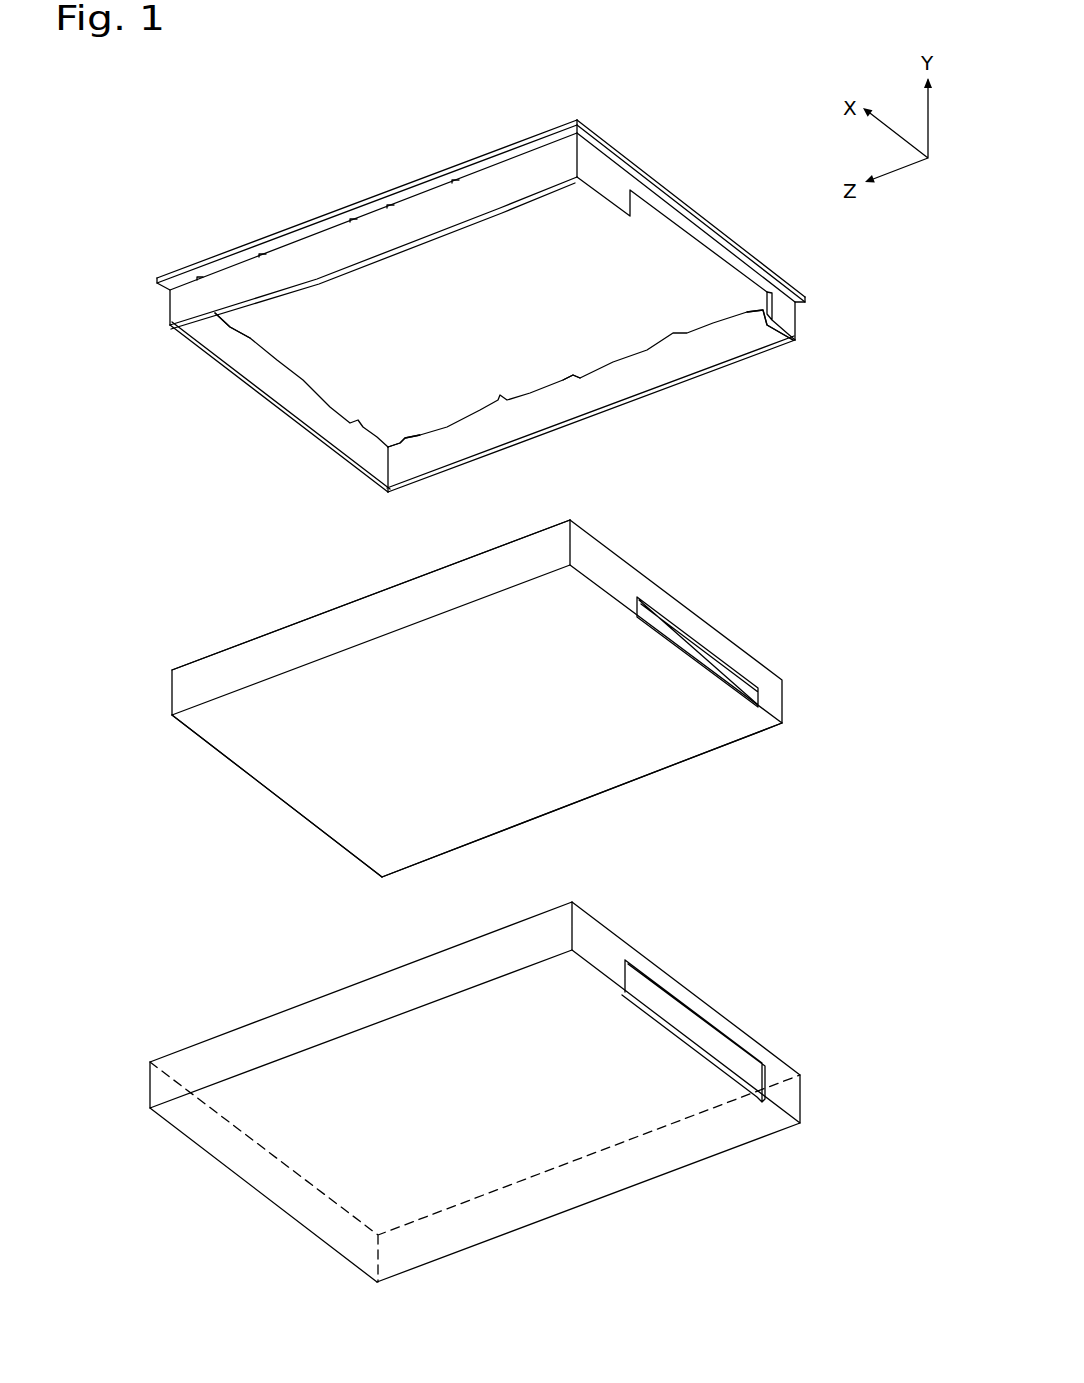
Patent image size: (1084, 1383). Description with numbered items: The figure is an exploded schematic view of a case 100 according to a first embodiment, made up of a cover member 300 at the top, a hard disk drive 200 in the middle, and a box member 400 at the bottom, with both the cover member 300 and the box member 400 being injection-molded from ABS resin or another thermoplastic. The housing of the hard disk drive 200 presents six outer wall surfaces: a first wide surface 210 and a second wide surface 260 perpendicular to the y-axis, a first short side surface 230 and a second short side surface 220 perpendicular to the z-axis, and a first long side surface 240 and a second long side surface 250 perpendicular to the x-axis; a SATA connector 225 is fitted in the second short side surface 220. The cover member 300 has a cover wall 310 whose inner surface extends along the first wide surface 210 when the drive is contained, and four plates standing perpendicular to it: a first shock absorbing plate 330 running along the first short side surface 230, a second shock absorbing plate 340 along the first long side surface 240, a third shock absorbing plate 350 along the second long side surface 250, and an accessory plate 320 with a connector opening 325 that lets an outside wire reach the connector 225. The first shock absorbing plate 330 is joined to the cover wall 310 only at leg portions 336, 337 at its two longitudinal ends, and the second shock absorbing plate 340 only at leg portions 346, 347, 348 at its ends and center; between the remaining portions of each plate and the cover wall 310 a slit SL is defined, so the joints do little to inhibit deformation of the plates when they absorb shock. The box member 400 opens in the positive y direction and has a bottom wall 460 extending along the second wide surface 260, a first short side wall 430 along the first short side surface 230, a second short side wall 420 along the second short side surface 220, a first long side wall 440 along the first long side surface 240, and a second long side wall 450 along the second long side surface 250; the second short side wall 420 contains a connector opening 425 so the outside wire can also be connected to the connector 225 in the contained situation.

The case 100 is at (97, 204).
The hard disk drive 200 is at (315, 600).
The first wide surface 210 is at (478, 553).
The second short side surface 220 is at (738, 655).
The connector 225 is at (682, 640).
The first short side surface 230 is at (220, 757).
The first long side surface 240 is at (578, 803).
The second long side surface 250 is at (398, 597).
The second wide surface 260 is at (325, 800).
The cover member 300 is at (176, 240).
The cover wall 310 is at (320, 217).
The accessory plate 320 is at (617, 214).
The connector opening 325 is at (767, 300).
The first shock absorbing plate 330 is at (302, 415).
The leg portion 336 is at (215, 315).
The leg portion 337 is at (387, 446).
The second shock absorbing plate 340 is at (610, 410).
The leg portion 346 is at (405, 440).
The leg portion 347 is at (578, 380).
The leg portion 348 is at (767, 322).
The third shock absorbing plate 350 is at (317, 280).
The slit SL is at (455, 181).
The box member 400 is at (170, 990).
The second short side wall 420 is at (608, 943).
The connector opening 425 is at (707, 1020).
The first short side wall 430 is at (270, 1177).
The first long side wall 440 is at (577, 1187).
The second long side wall 450 is at (250, 1040).
The bottom wall 460 is at (357, 1205).